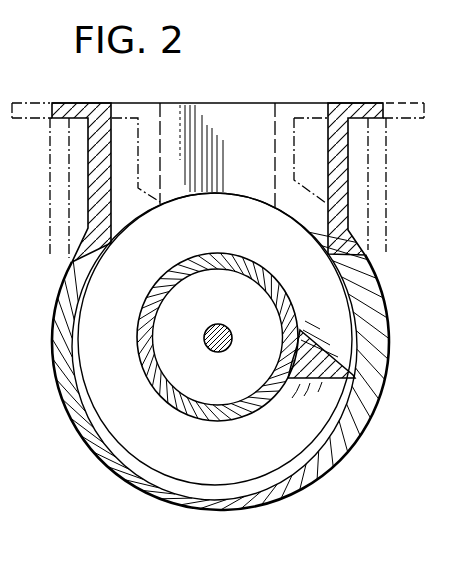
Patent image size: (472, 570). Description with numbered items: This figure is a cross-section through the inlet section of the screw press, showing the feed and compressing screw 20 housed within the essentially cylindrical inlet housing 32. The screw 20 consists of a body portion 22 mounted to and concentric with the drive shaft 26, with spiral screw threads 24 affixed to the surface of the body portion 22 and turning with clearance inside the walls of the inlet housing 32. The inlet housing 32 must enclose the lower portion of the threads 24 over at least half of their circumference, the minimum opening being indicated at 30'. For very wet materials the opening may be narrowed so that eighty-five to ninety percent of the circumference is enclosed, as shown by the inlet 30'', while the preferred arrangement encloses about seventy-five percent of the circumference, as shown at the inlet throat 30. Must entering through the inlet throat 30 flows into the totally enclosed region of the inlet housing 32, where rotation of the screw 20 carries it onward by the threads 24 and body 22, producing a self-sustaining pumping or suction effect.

The feed and compressing screw 20 is at (118, 422).
The body portion 22 is at (249, 265).
The spiral screw threads 24 is at (122, 350).
The drive shaft 26 is at (212, 329).
The inlet throat 30 is at (219, 105).
The opening 30' is at (410, 184).
The inlet 30'' is at (251, 155).
The inlet housing 32 is at (344, 453).